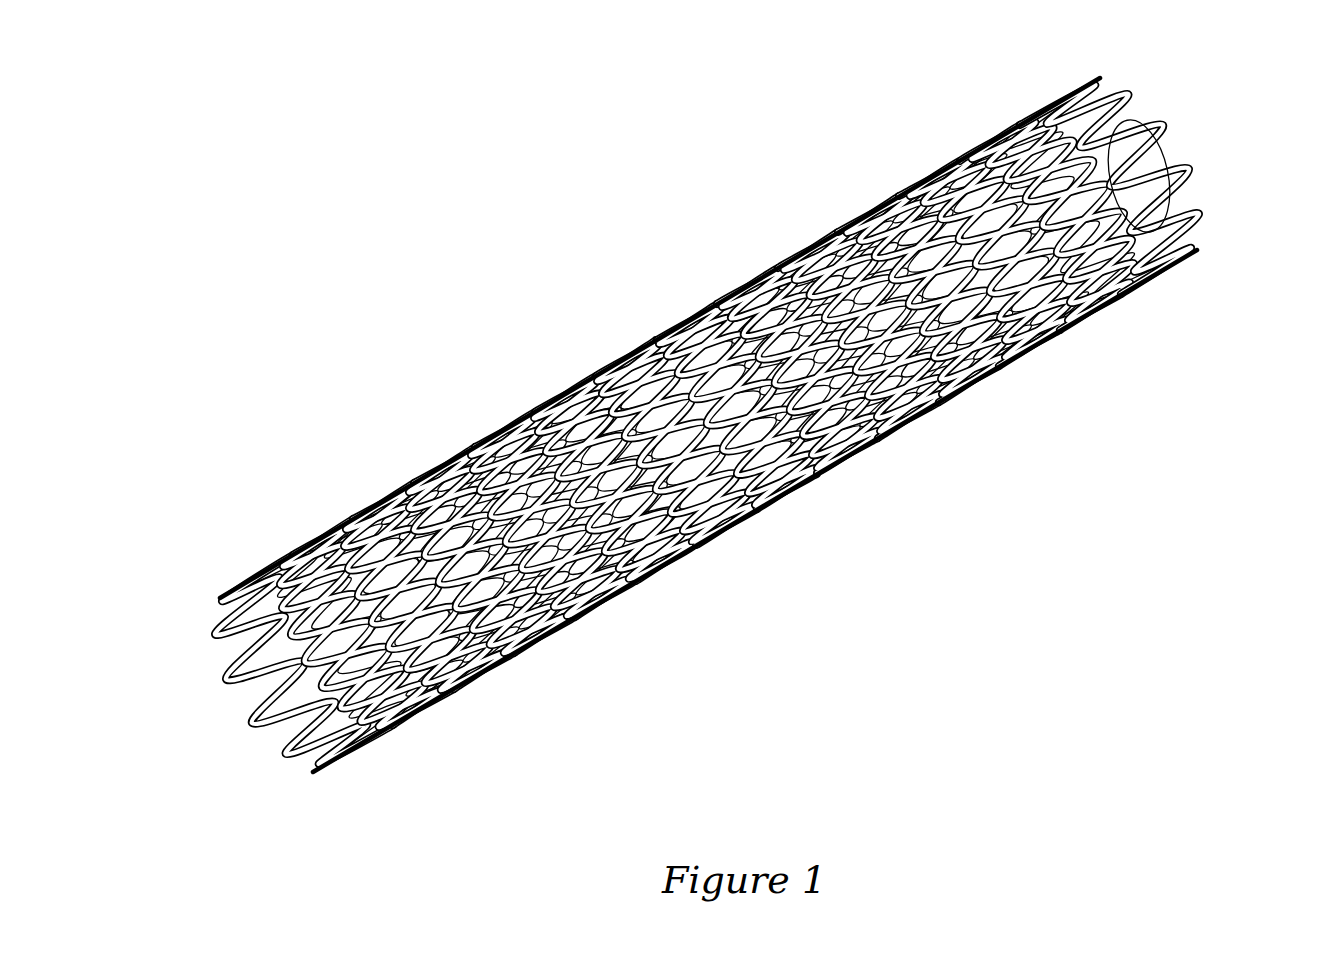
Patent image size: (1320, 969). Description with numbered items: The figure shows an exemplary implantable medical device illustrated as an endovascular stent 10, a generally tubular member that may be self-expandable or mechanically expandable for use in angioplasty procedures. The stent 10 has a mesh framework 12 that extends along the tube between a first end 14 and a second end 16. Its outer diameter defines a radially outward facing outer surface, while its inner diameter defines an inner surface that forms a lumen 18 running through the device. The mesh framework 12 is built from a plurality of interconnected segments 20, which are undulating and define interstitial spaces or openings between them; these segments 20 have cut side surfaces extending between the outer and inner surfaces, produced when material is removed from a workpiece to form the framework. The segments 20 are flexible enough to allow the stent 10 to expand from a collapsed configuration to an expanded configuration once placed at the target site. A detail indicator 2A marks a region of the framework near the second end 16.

The endovascular stent 10 is at (721, 442).
The mesh framework 12 is at (698, 545).
The first end 14 is at (262, 694).
The second end 16 is at (1222, 240).
The lumen 18 is at (210, 725).
The interconnected segments 20 is at (1132, 90).
The section line 2A is at (1162, 153).